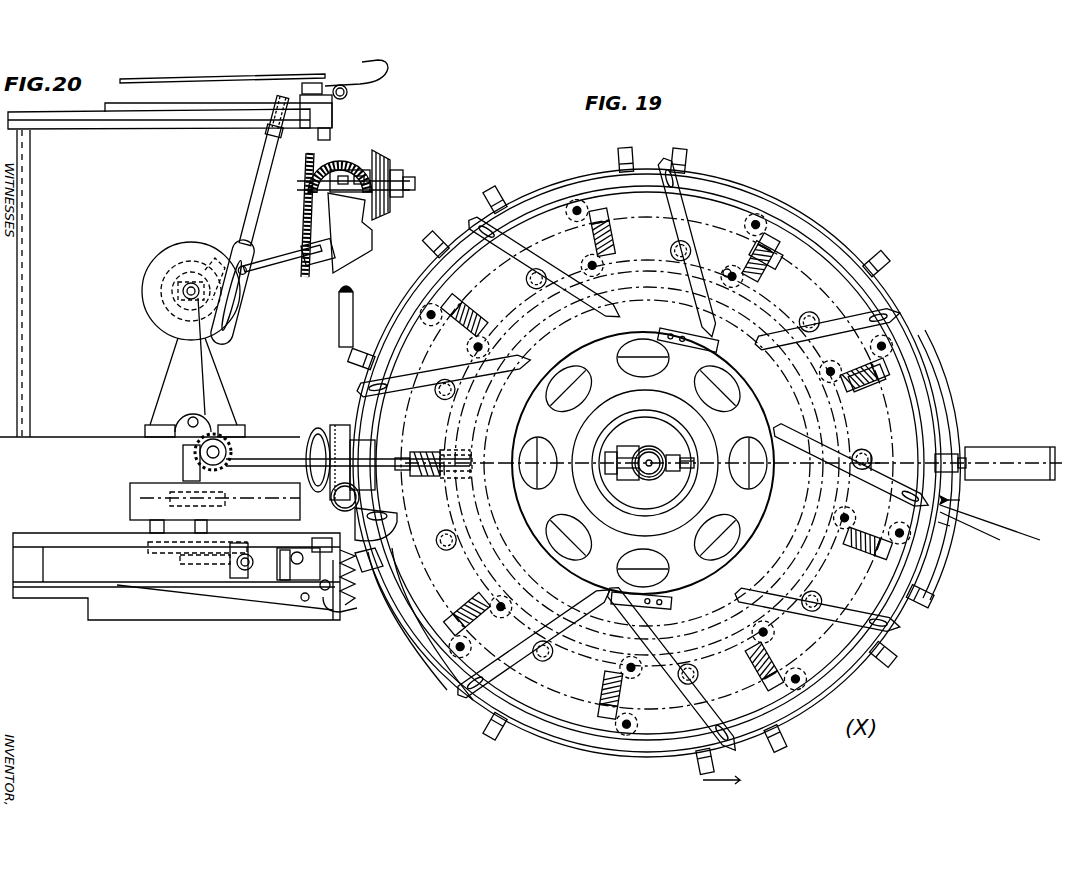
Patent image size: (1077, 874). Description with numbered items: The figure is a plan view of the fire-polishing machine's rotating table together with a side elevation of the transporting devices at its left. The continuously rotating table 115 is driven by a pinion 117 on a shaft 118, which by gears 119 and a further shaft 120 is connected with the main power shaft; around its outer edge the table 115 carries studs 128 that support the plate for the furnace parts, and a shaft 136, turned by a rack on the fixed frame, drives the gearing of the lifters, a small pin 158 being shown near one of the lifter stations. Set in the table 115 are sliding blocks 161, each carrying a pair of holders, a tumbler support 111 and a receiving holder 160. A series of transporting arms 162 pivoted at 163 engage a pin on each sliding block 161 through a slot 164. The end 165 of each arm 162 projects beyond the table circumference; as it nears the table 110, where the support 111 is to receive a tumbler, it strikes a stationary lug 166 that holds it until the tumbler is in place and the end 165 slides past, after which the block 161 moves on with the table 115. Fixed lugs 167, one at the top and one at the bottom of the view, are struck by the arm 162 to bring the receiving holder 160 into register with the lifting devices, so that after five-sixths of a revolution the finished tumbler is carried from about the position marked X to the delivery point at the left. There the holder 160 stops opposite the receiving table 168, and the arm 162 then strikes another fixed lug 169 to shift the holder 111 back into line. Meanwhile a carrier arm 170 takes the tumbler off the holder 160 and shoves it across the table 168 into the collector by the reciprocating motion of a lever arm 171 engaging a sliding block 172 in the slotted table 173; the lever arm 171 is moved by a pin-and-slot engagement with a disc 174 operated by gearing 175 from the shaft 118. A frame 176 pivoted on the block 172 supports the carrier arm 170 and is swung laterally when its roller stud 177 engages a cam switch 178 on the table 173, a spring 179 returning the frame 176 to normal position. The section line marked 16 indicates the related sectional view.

In FIG. 19, the table 110 is at (1010, 452).
In FIG. 19, the tumbler support 111 is at (878, 262).
In FIG. 19, the table 115 is at (935, 385).
In FIG. 19, the pinion 117 is at (445, 452).
In FIG. 20, the shaft 118 is at (408, 178).
In FIG. 20, the gears 119 is at (355, 155).
In FIG. 20, the shaft 120 is at (354, 300).
In FIG. 19, the studs 128 is at (890, 372).
In FIG. 19, the shaft 136 is at (762, 230).
In FIG. 19, the pin 158 is at (730, 270).
In FIG. 19, the receiving holder 160 is at (912, 318).
In FIG. 19, the sliding block 161 is at (905, 290).
In FIG. 19, the transporting arm 162 is at (680, 232).
In FIG. 19, the pivot 163 is at (866, 452).
In FIG. 19, the slot 164 is at (952, 520).
In FIG. 19, the end of arm 165 is at (900, 628).
In FIG. 19, the stationary lug 166 is at (960, 500).
In FIG. 19, the fixed lugs 167 is at (680, 325).
In FIG. 20, the receiving table 168 is at (210, 78).
In FIG. 20, the fixed lug 169 is at (340, 580).
In FIG. 20, the carrier arm 170 is at (390, 70).
In FIG. 20, the lever arm 171 is at (255, 188).
In FIG. 20, the sliding block 172 is at (240, 570).
In FIG. 20, the slotted table 173 is at (130, 130).
In FIG. 20, the disc 174 is at (165, 252).
In FIG. 20, the gearing 175 is at (305, 224).
In FIG. 20, the frame 176 is at (330, 97).
In FIG. 20, the roller stud 177 is at (332, 615).
In FIG. 20, the cam switch 178 is at (215, 110).
In FIG. 20, the spring 179 is at (348, 92).
In FIG. 20, the section reference 16 is at (150, 497).